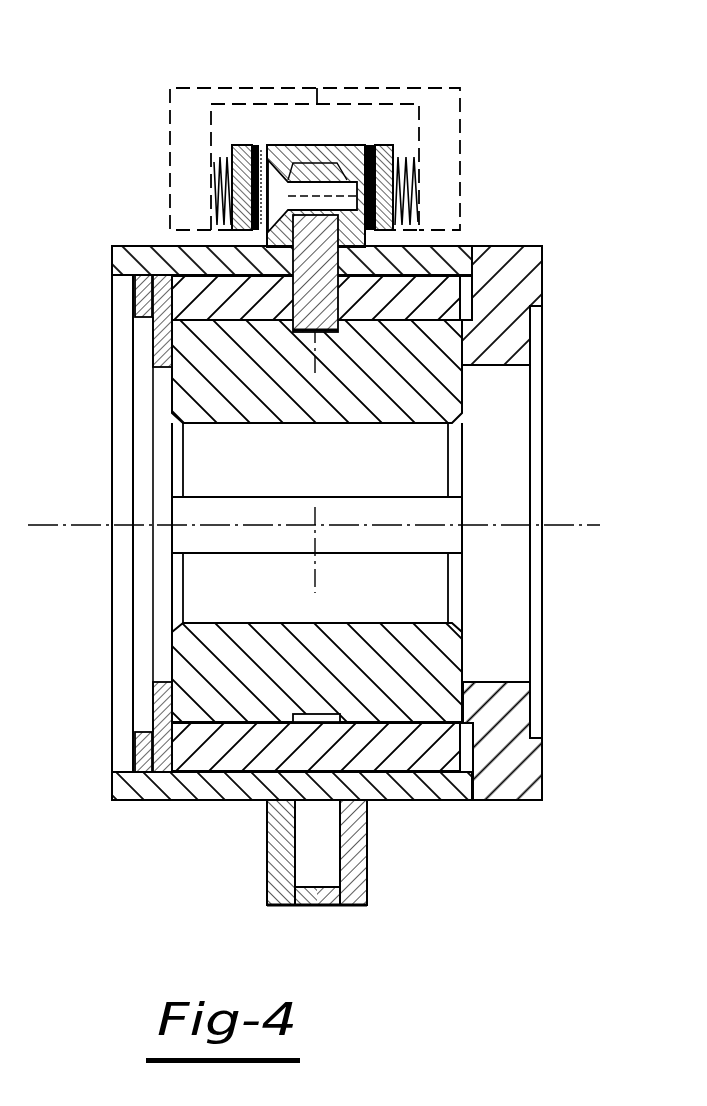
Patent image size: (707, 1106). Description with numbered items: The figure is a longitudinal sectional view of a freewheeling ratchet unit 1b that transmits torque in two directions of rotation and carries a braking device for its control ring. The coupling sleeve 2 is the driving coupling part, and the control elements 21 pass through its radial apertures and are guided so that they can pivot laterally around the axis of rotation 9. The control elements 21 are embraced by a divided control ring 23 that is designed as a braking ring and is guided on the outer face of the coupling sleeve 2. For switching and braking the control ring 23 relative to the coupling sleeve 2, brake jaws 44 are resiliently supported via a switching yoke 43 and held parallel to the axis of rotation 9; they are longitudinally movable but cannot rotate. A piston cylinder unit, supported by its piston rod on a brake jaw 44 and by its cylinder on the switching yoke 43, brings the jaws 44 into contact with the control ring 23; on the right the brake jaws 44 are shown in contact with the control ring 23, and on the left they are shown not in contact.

The freewheeling ratchet unit 1b is at (606, 114).
The coupling sleeve 2 is at (137, 258).
The axis of rotation 9 is at (565, 523).
The control element 21 is at (352, 284).
The control ring 23 is at (335, 145).
The switching yoke 43 is at (440, 171).
The brake jaw 44 is at (230, 164).